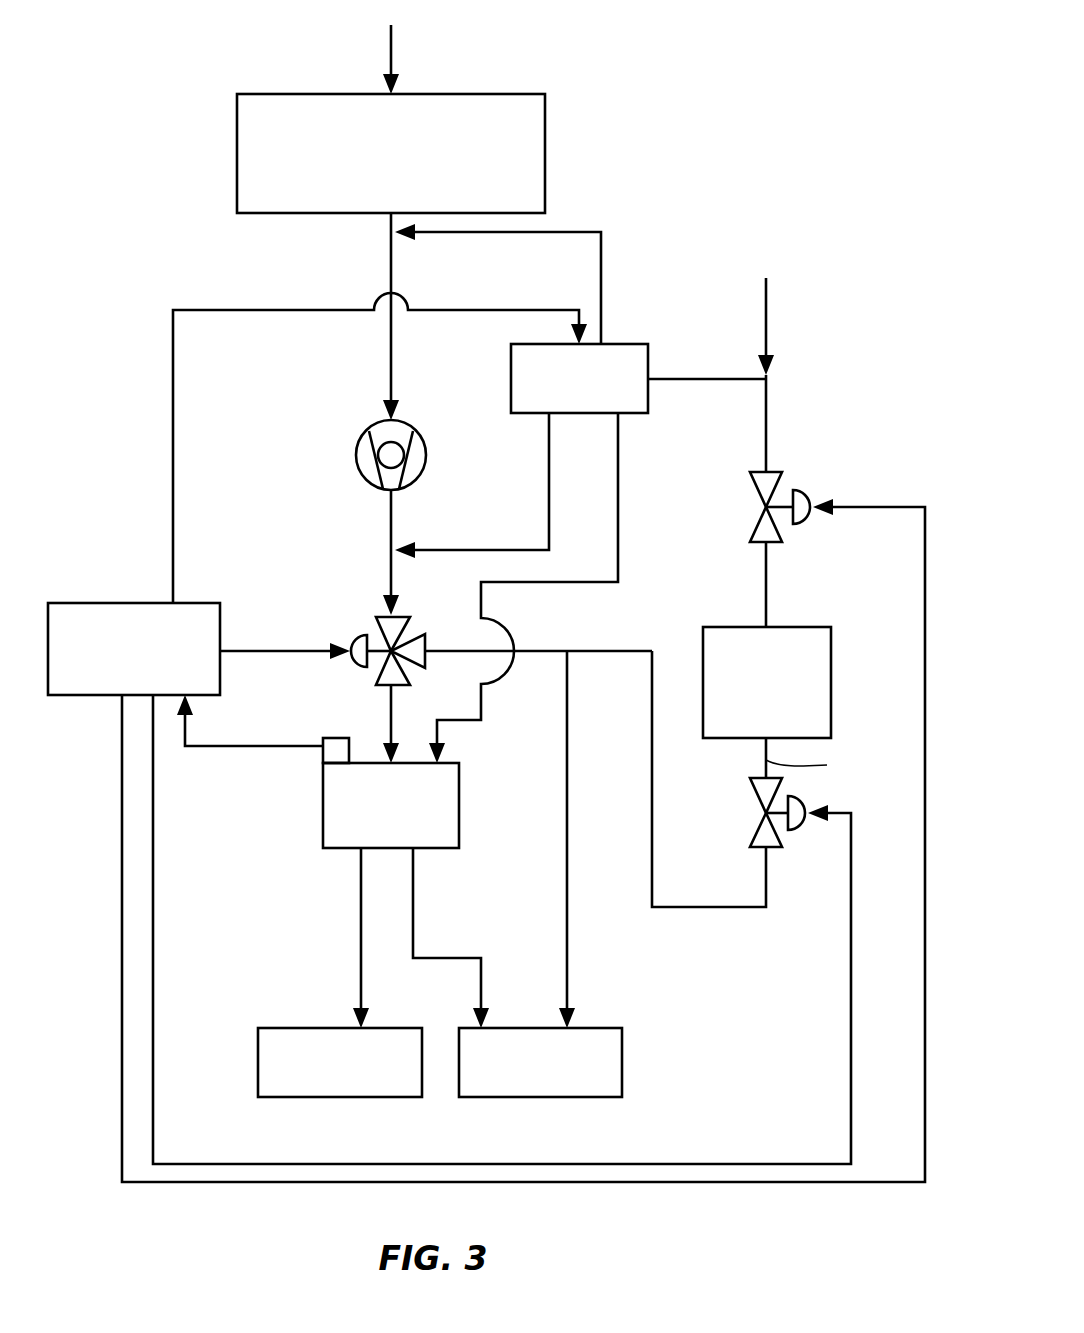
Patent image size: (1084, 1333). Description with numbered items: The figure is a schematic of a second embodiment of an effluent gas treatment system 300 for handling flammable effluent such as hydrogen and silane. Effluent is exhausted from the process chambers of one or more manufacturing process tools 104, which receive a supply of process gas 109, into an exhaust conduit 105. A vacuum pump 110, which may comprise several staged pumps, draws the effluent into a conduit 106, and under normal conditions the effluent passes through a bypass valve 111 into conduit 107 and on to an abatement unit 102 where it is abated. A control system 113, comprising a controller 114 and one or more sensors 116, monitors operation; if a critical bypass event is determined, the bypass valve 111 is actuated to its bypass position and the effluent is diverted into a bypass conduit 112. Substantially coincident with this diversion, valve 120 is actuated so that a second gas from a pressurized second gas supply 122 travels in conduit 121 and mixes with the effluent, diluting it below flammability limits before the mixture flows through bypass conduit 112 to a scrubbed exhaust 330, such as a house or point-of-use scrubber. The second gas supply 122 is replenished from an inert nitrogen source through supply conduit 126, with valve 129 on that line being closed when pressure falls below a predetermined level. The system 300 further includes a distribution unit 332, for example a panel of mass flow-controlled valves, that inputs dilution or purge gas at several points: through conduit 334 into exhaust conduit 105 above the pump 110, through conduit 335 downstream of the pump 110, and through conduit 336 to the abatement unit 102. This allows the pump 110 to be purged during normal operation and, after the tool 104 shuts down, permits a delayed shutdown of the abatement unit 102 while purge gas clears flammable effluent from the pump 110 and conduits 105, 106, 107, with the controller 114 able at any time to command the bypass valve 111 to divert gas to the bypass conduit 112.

The effluent gas treatment system 300 is at (690, 165).
The manufacturing process tool 104 is at (545, 154).
The supply of process gas 109 is at (392, 53).
The exhaust conduit 105 is at (391, 256).
The conduit 334 is at (601, 292).
The distribution unit 332 is at (511, 378).
The conduit 336 is at (618, 462).
The conduit 335 is at (549, 480).
The vacuum pump 110 is at (356, 462).
The conduit 106 is at (391, 530).
The bypass valve 111 is at (410, 617).
The conduit 107 is at (391, 720).
The abatement unit 102 is at (323, 848).
The sensor 116 is at (340, 738).
The controller 114 is at (122, 603).
The control system 113 is at (145, 543).
The bypass conduit 112 is at (567, 862).
The scrubbed exhaust 330 is at (622, 1070).
The valve 129 is at (785, 472).
The supply conduit 126 is at (766, 580).
The second gas supply 122 is at (805, 627).
The valve 120 is at (755, 818).
The conduit 121 is at (703, 908).